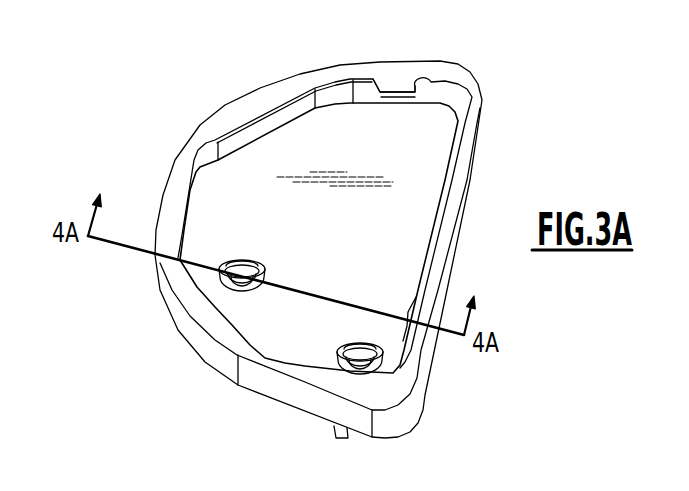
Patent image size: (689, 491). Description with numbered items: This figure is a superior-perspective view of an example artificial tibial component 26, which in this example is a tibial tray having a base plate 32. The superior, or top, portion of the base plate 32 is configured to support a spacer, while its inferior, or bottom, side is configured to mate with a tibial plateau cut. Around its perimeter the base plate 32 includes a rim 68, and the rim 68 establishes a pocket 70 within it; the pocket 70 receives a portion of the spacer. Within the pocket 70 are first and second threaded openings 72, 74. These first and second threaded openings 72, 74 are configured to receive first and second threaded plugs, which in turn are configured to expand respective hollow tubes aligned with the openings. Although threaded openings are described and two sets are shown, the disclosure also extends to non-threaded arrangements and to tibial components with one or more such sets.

The artificial tibial component 26 is at (206, 64).
The base plate 32 is at (228, 366).
The rim 68 is at (390, 72).
The pocket 70 is at (429, 128).
The first threaded opening 72 is at (254, 252).
The second threaded opening 74 is at (342, 335).